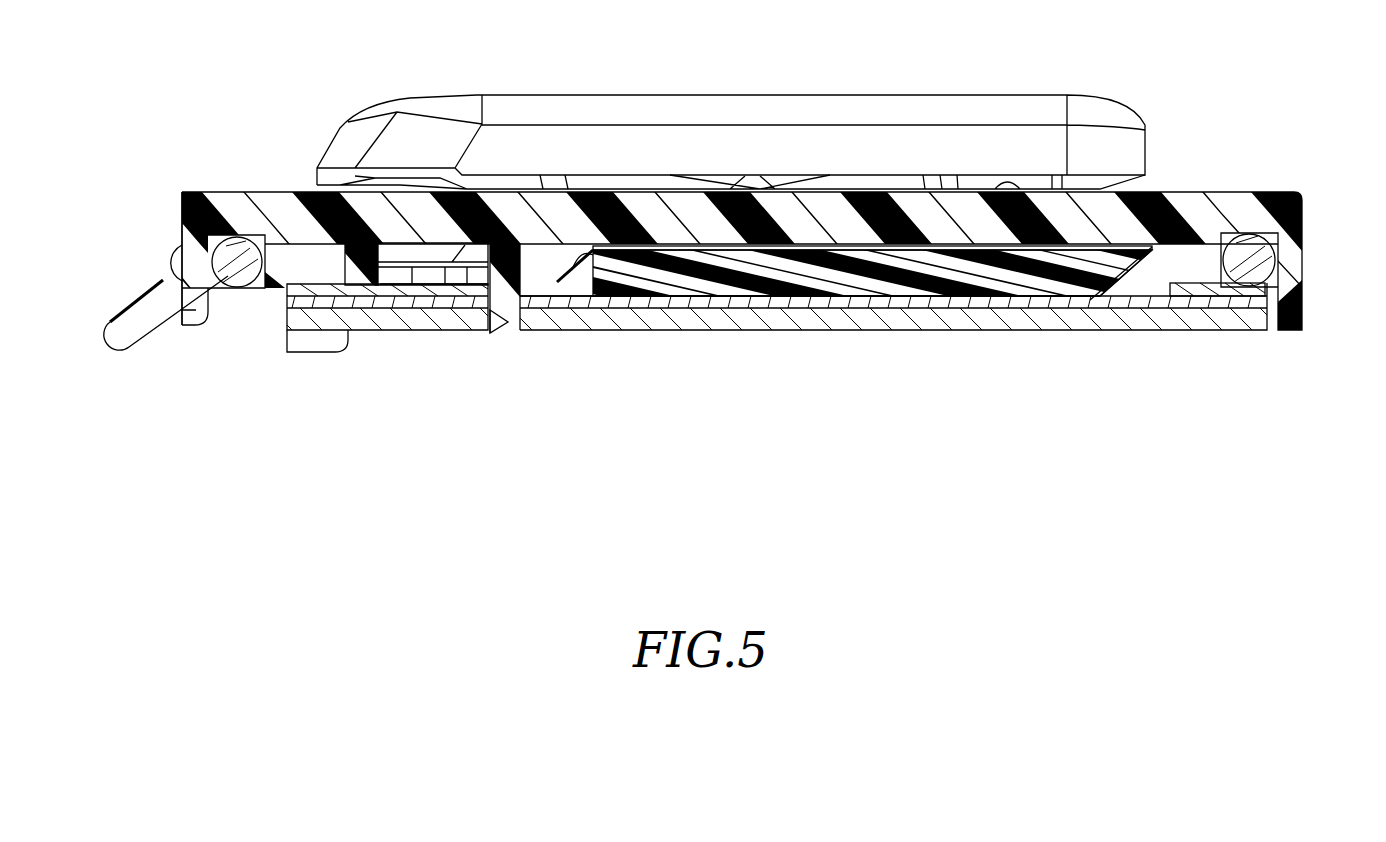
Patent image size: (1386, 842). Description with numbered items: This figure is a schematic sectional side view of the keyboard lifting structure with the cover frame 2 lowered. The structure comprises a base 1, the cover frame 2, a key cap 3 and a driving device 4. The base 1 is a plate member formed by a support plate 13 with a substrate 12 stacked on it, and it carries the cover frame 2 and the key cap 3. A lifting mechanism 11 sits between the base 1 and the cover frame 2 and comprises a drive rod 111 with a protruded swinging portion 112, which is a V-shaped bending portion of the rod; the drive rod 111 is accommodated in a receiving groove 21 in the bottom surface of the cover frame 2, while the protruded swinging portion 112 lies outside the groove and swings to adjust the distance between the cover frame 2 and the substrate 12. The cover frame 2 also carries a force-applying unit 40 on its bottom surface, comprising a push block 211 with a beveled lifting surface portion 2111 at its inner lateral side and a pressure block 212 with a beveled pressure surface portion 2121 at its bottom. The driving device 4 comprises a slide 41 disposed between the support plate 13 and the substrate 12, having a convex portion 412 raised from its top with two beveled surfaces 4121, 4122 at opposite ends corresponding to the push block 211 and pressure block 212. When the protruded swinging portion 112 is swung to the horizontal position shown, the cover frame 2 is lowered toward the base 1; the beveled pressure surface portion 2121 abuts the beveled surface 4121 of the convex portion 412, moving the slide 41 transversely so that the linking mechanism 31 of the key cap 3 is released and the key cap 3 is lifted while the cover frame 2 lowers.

The base 1 is at (383, 402).
The lifting mechanism 11 is at (240, 404).
The drive rod 111 is at (238, 278).
The protruded swinging portion 112 is at (168, 270).
The substrate 12 is at (374, 290).
The support plate 13 is at (318, 312).
The cover frame 2 is at (1197, 200).
The receiving groove 21 is at (222, 237).
The push block 211 is at (1222, 262).
The beveled lifting surface portion 2111 is at (1098, 285).
The pressure block 212 is at (535, 268).
The beveled pressure surface portion 2121 is at (497, 330).
The key cap 3 is at (646, 106).
The linking mechanism 31 is at (880, 185).
The driving device 4 is at (863, 347).
The slide 41 is at (806, 412).
The convex portion 412 is at (782, 262).
The beveled surface 4121 is at (590, 258).
The beveled surface 4122 is at (1165, 300).
The force-applying unit 40 is at (1264, 158).